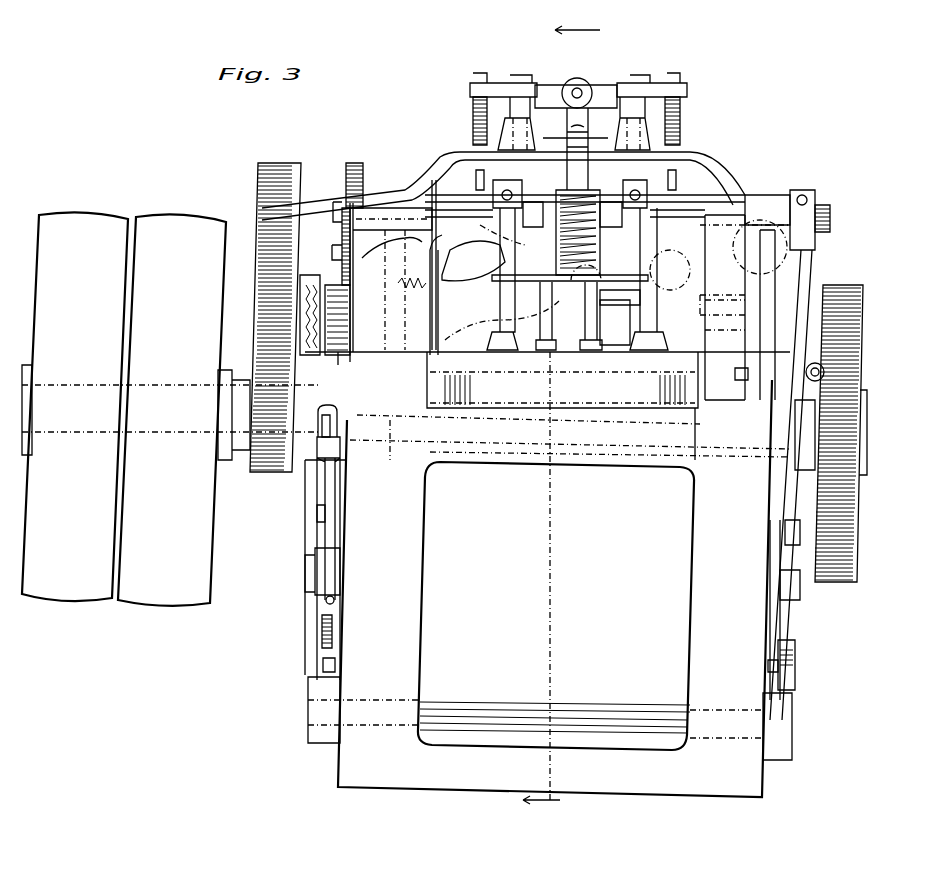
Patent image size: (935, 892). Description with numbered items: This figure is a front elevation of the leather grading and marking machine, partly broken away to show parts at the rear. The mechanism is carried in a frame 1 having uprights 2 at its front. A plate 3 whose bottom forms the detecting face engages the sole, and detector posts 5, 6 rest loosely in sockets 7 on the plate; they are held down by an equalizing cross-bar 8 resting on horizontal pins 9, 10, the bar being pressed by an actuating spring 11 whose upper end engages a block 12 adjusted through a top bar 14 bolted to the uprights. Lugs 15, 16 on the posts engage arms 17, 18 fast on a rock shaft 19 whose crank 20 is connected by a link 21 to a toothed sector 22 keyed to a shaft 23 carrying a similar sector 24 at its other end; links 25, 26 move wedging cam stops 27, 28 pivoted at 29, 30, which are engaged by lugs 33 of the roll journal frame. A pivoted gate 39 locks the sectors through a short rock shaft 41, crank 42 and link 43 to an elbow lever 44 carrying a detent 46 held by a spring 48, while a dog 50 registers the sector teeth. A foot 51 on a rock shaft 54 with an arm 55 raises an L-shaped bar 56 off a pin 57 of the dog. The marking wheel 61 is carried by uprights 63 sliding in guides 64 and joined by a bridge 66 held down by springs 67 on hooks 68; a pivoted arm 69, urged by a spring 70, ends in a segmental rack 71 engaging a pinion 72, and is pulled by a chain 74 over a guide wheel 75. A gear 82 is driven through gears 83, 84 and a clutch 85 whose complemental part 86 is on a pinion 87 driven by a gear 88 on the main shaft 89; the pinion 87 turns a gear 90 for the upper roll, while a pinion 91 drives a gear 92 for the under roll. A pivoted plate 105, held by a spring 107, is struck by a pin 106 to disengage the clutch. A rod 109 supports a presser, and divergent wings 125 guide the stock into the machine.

The frame 1 is at (547, 574).
The uprights 2 is at (728, 307).
The plate 3 is at (708, 360).
The detector post 5 is at (662, 327).
The detector post 6 is at (470, 335).
The sockets 7 is at (495, 338).
The equalizing cross-bar 8 is at (625, 263).
The bracket or horizontal pin 9 is at (648, 283).
The bracket or horizontal pin 10 is at (500, 312).
The actuating spring 11 is at (480, 245).
The block 12 is at (480, 190).
The top bar 14 is at (725, 168).
The fixed lug 15 is at (622, 190).
The fixed lug 16 is at (518, 191).
The arm or lever 17 is at (611, 214).
The arm or lever 18 is at (533, 214).
The rock shaft 19 is at (832, 218).
The crank 20 is at (816, 198).
The link 21 is at (826, 376).
The toothed sector 22 is at (857, 515).
The shaft 23 is at (395, 445).
The toothed sector 24 is at (325, 490).
The link 25 is at (820, 540).
The link 26 is at (316, 512).
The cam stop 27 is at (797, 688).
The cam stop 28 is at (322, 670).
The pivot 29 is at (802, 605).
The pivot 30 is at (304, 580).
The lugs 33 is at (307, 728).
The pivoted gate 39 is at (515, 418).
The short rock shaft 41 is at (326, 440).
The crank 42 is at (318, 455).
The link 43 is at (320, 420).
The elbow lever 44 is at (325, 545).
The dog or detent 46 is at (322, 640).
The spring 48 is at (336, 600).
The dog 50 is at (796, 672).
The foot 51 is at (622, 312).
The rock shaft 54 is at (700, 308).
The arm 55 is at (790, 290).
The L-shaped bar 56 is at (860, 305).
The pin 57 is at (768, 672).
The marking wheel 61 is at (560, 300).
The uprights 63 is at (532, 118).
The guides 64 is at (500, 118).
The bridge 66 is at (575, 60).
The springs 67 is at (473, 112).
The stationary hooks 68 is at (470, 185).
The pivoted arm 69 is at (615, 112).
The spring 70 is at (585, 115).
The segmental rack 71 is at (660, 258).
The pinion 72 is at (545, 288).
The chain 74 is at (738, 192).
The guide wheel 75 is at (812, 256).
The gear 82 is at (355, 163).
The gear 83 is at (345, 173).
The gear 84 is at (382, 268).
The ratchet gear or clutch 85 is at (342, 360).
The clutch complemental portion 86 is at (305, 275).
The pinion 87 is at (256, 322).
The gear 88 is at (215, 480).
The main shaft 89 is at (240, 450).
The gear 90 is at (256, 170).
The pinion 91 is at (860, 440).
The gear 92 is at (862, 344).
The pivoted plate 105 is at (352, 358).
The pin 106 is at (545, 265).
The spring 107 is at (412, 272).
The rod 109 is at (580, 345).
The divergent wings 125 is at (438, 410).